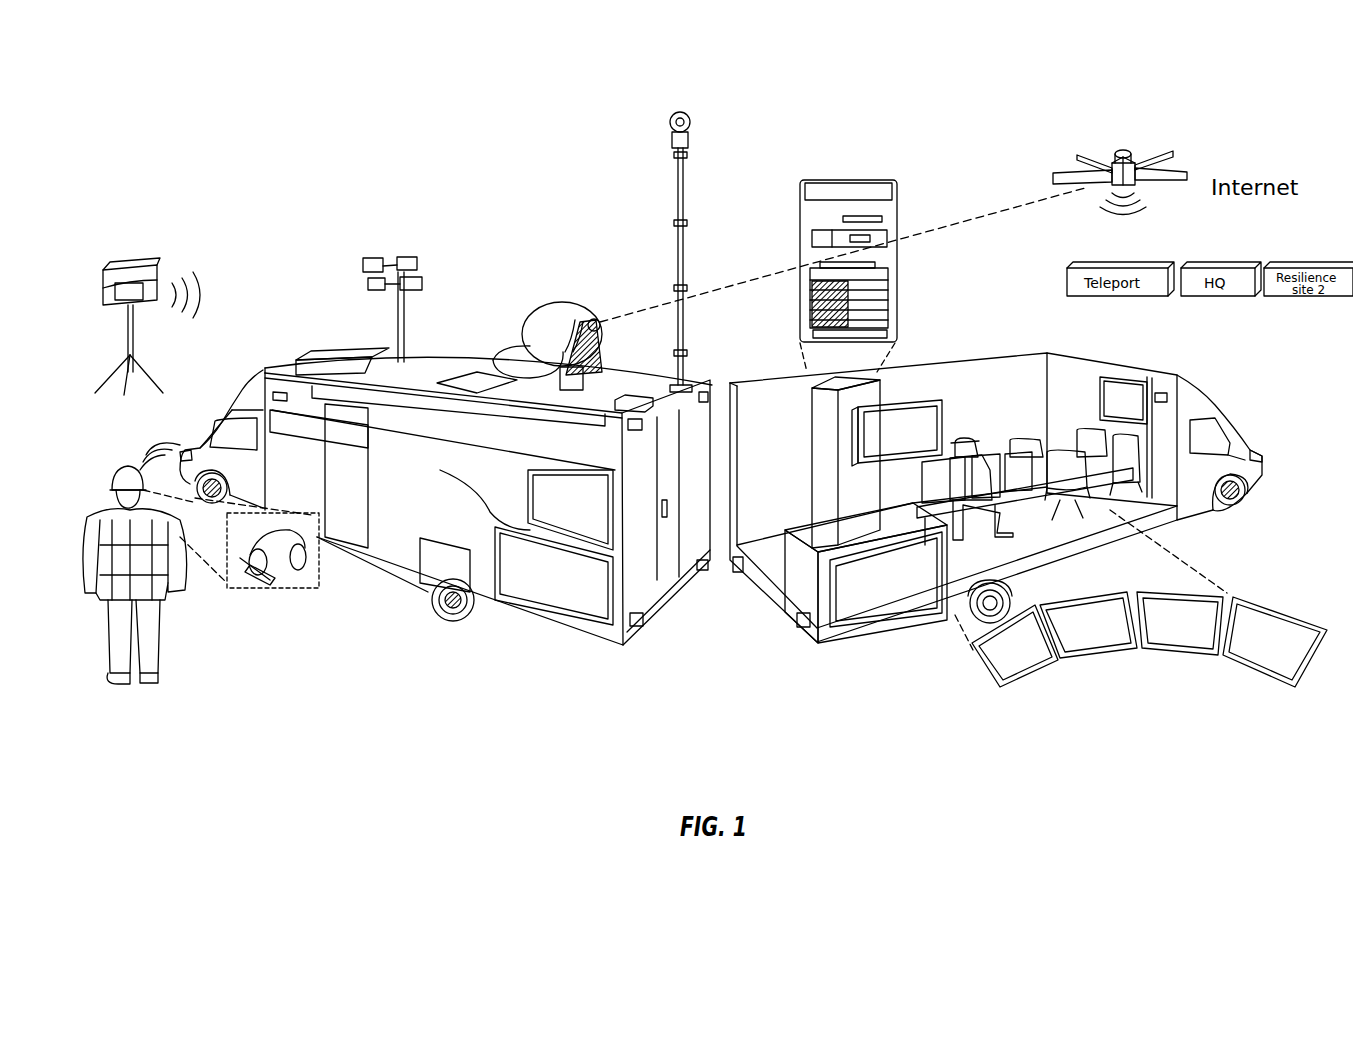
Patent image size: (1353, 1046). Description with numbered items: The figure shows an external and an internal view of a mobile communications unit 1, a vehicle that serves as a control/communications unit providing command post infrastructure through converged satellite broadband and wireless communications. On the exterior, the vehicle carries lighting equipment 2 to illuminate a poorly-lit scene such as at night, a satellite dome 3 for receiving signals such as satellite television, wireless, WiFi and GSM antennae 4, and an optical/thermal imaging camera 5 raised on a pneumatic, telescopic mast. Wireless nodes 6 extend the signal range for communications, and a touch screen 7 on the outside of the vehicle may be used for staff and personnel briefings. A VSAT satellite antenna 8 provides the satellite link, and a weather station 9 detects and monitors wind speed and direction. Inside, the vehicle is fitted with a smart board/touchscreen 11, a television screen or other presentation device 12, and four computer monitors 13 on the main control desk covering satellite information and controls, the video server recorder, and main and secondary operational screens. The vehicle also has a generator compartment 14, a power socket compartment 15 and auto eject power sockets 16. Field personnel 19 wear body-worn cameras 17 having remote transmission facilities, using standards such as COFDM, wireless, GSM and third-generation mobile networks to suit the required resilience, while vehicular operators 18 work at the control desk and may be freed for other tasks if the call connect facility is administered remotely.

The mobile communications unit 1 is at (557, 681).
The lighting equipment 2 is at (413, 257).
The satellite dome 3 is at (517, 347).
The wireless, WiFi, GSM antennae 4 is at (308, 367).
The optical/thermal imaging camera 5 is at (684, 112).
The wireless nodes 6 is at (128, 268).
The touch screen 7 is at (567, 507).
The VSAT satellite antenna 8 is at (555, 308).
The weather station 9 is at (688, 380).
The smart board/touchscreen 11 is at (900, 427).
The television screen 12 is at (1120, 400).
The computer monitors 13 is at (1022, 663).
The generator compartment 14 is at (810, 613).
The power socket compartment 15 is at (900, 612).
The auto eject power sockets 16 is at (1207, 503).
The body-worn cameras 17 is at (275, 590).
The vehicular operators 18 is at (958, 432).
The field personnel 19 is at (90, 560).